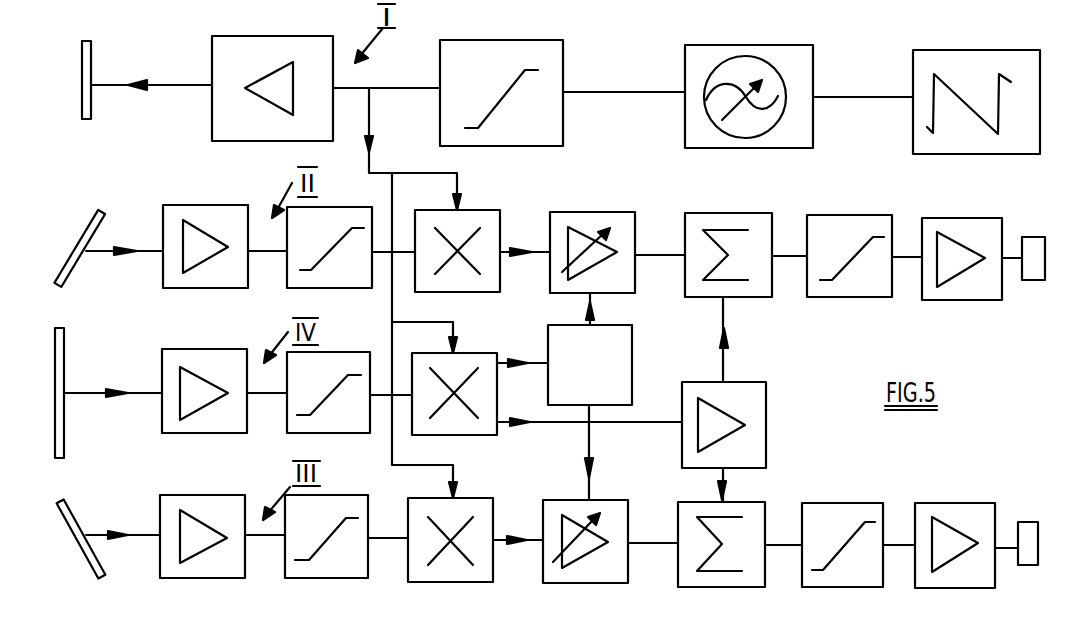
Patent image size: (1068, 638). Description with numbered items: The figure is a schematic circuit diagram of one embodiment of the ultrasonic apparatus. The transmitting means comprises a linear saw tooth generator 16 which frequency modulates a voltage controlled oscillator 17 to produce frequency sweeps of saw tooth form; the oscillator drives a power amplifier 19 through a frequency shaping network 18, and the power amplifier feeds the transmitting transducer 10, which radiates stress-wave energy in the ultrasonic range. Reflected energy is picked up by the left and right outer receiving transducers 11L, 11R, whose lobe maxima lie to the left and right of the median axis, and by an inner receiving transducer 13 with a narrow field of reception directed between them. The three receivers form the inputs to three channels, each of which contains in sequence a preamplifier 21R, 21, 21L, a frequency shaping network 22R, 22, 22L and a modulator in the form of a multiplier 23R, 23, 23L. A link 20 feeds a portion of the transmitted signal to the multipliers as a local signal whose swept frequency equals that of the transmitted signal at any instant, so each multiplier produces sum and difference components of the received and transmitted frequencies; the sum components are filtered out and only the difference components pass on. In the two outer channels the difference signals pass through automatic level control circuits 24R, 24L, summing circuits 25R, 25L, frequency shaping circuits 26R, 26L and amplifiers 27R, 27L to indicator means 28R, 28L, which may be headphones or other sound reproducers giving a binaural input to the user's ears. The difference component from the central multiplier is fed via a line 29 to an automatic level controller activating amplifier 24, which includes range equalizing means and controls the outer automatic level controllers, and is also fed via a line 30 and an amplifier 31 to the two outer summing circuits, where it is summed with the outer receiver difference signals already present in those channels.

The transmitting transducer 10 is at (91, 61).
The right outer receiving transducer 11R is at (94, 229).
The left outer receiving transducer 11L is at (120, 560).
The inner receiving transducer 13 is at (64, 352).
The linear saw tooth generator 16 is at (968, 155).
The voltage controlled oscillator 17 is at (760, 150).
The frequency shaping network 18 is at (522, 147).
The power amplifier 19 is at (260, 142).
The link 20 is at (405, 165).
The preamplifier 21 is at (207, 434).
The preamplifier 21R is at (212, 288).
The preamplifier 21L is at (202, 579).
The frequency shaping network 22 is at (345, 434).
The frequency shaping network 22R is at (358, 289).
The frequency shaping network 22L is at (342, 579).
The multiplier 23 is at (480, 436).
The multiplier 23R is at (478, 292).
The multiplier 23L is at (458, 583).
The automatic level controller activating amplifier 24 is at (632, 398).
The automatic level control circuit 24R is at (633, 292).
The automatic level control circuit 24L is at (625, 583).
The summing circuit 25R is at (768, 291).
The summing circuit 25L is at (755, 587).
The frequency shaping circuit 26R is at (892, 297).
The frequency shaping circuit 26L is at (883, 587).
The amplifier 27R is at (950, 300).
The amplifier 27L is at (962, 589).
The indicator means 28R is at (1028, 281).
The indicator means 28L is at (1022, 566).
The line 29 is at (506, 361).
The line 30 is at (633, 423).
The amplifier 31 is at (767, 469).